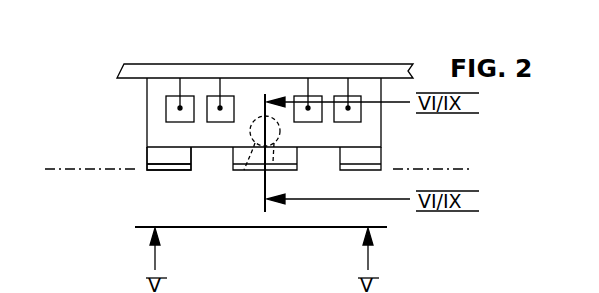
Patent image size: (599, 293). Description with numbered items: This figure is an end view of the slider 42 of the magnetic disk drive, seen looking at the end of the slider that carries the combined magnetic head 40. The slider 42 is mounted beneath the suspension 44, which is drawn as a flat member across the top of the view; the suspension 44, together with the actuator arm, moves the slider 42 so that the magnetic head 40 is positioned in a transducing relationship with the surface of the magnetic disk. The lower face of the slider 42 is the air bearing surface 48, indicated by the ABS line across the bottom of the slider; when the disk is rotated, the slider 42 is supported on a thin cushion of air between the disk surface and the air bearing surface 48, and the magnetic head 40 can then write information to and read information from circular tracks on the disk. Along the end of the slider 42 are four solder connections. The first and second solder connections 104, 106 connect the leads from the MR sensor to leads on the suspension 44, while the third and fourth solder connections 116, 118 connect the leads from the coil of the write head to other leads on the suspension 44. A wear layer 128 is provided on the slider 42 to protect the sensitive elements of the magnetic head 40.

The combined magnetic head 40 is at (244, 172).
The slider 42 is at (147, 107).
The suspension 44 is at (386, 63).
The air bearing surface (ABS) 48 is at (70, 172).
The first solder connection 104 is at (166, 100).
The second solder connection 106 is at (336, 97).
The third solder connection 116 is at (207, 100).
The fourth solder connection 118 is at (295, 97).
The wear layer 128 is at (155, 172).